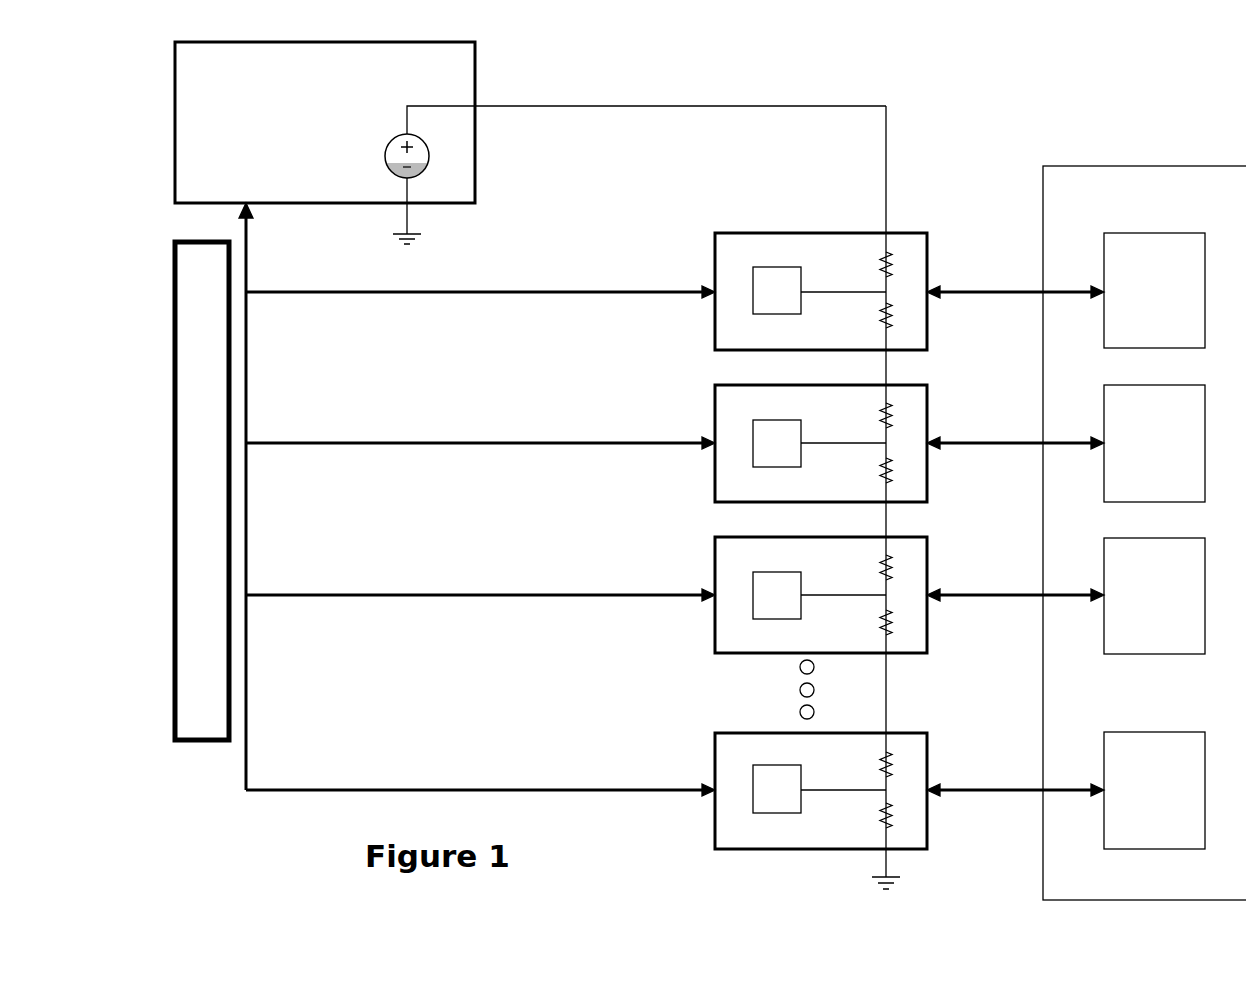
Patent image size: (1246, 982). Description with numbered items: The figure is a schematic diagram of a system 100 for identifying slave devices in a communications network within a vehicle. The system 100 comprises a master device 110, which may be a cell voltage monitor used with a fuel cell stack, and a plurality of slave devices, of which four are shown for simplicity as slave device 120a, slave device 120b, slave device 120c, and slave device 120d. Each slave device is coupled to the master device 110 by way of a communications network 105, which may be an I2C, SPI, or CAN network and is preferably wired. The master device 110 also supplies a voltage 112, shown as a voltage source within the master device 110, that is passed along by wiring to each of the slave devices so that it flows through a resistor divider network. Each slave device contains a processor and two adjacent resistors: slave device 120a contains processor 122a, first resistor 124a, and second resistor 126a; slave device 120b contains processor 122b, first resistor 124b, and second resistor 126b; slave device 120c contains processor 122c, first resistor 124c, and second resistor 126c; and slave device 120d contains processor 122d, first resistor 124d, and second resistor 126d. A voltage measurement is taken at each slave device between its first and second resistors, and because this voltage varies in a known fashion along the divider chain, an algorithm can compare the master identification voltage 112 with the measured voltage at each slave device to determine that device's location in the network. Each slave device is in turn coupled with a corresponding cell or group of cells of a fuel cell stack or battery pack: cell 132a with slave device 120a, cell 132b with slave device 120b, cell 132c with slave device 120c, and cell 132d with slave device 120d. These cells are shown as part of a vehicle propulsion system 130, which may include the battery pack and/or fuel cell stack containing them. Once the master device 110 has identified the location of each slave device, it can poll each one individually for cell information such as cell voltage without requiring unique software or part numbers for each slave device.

The system 100 is at (1000, 87).
The communications network 105 is at (445, 499).
The master device 110 is at (370, 207).
The voltage 112 is at (385, 155).
The slave device 120a is at (929, 279).
The slave device 120b is at (929, 429).
The slave device 120c is at (929, 580).
The slave device 120d is at (929, 781).
The processor 122a is at (819, 290).
The processor 122b is at (819, 443).
The processor 122c is at (819, 595).
The processor 122d is at (819, 789).
The first resistor 124a is at (910, 255).
The first resistor 124b is at (912, 410).
The first resistor 124c is at (912, 568).
The first resistor 124d is at (911, 762).
The second resistor 126a is at (912, 311).
The second resistor 126b is at (914, 465).
The second resistor 126c is at (912, 624).
The second resistor 126d is at (911, 818).
The vehicle propulsion system 130 is at (1167, 166).
The cell 132a is at (1066, 290).
The cell 132b is at (1066, 443).
The cell 132c is at (1066, 596).
The cell 132d is at (1066, 790).